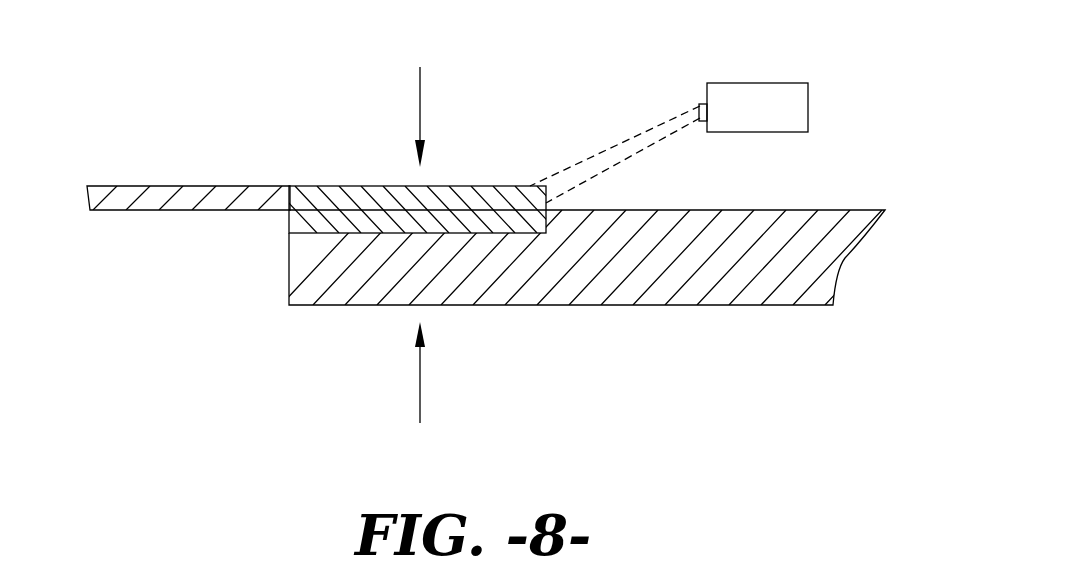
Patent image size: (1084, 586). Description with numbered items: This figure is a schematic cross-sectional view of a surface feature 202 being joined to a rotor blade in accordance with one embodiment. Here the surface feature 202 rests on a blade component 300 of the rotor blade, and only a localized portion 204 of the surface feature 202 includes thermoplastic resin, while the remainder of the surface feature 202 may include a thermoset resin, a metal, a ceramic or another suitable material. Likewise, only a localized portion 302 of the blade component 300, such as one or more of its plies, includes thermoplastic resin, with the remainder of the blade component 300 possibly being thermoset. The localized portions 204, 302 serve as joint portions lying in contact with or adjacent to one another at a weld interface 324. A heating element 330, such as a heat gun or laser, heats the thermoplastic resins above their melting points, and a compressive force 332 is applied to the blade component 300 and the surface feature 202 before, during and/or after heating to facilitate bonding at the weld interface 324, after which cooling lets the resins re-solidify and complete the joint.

The surface feature 202 is at (218, 172).
The localized portion of the surface feature 204 is at (452, 172).
The blade component 300 is at (626, 342).
The localized portion of the blade component 302 is at (350, 238).
The weld interface 324 is at (421, 226).
The heating element 330 is at (764, 64).
The compressive force 332 is at (418, 378).